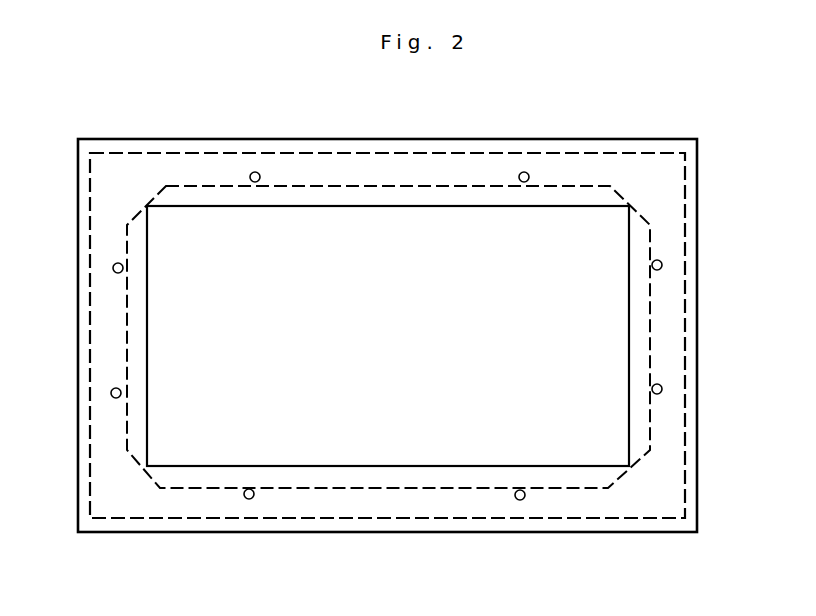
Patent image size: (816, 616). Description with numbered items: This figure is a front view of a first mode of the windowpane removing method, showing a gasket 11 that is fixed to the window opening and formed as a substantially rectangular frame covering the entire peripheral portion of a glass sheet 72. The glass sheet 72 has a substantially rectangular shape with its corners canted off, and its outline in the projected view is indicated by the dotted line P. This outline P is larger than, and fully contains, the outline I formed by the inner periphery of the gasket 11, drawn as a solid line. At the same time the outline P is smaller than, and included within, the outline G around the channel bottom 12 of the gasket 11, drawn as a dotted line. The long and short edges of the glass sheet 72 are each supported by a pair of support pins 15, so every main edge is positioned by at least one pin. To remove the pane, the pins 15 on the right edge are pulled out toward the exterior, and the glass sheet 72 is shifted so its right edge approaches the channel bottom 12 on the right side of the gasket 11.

The gasket 11 is at (186, 137).
The channel bottom 12 is at (438, 152).
The support pins 15 is at (257, 172).
The glass sheet 72 is at (395, 336).
The outline formed by the inner periphery of the gasket I is at (383, 203).
The outline around the channel bottom of the gasket G is at (643, 153).
The outline of the glass sheet in the projected view P is at (648, 214).